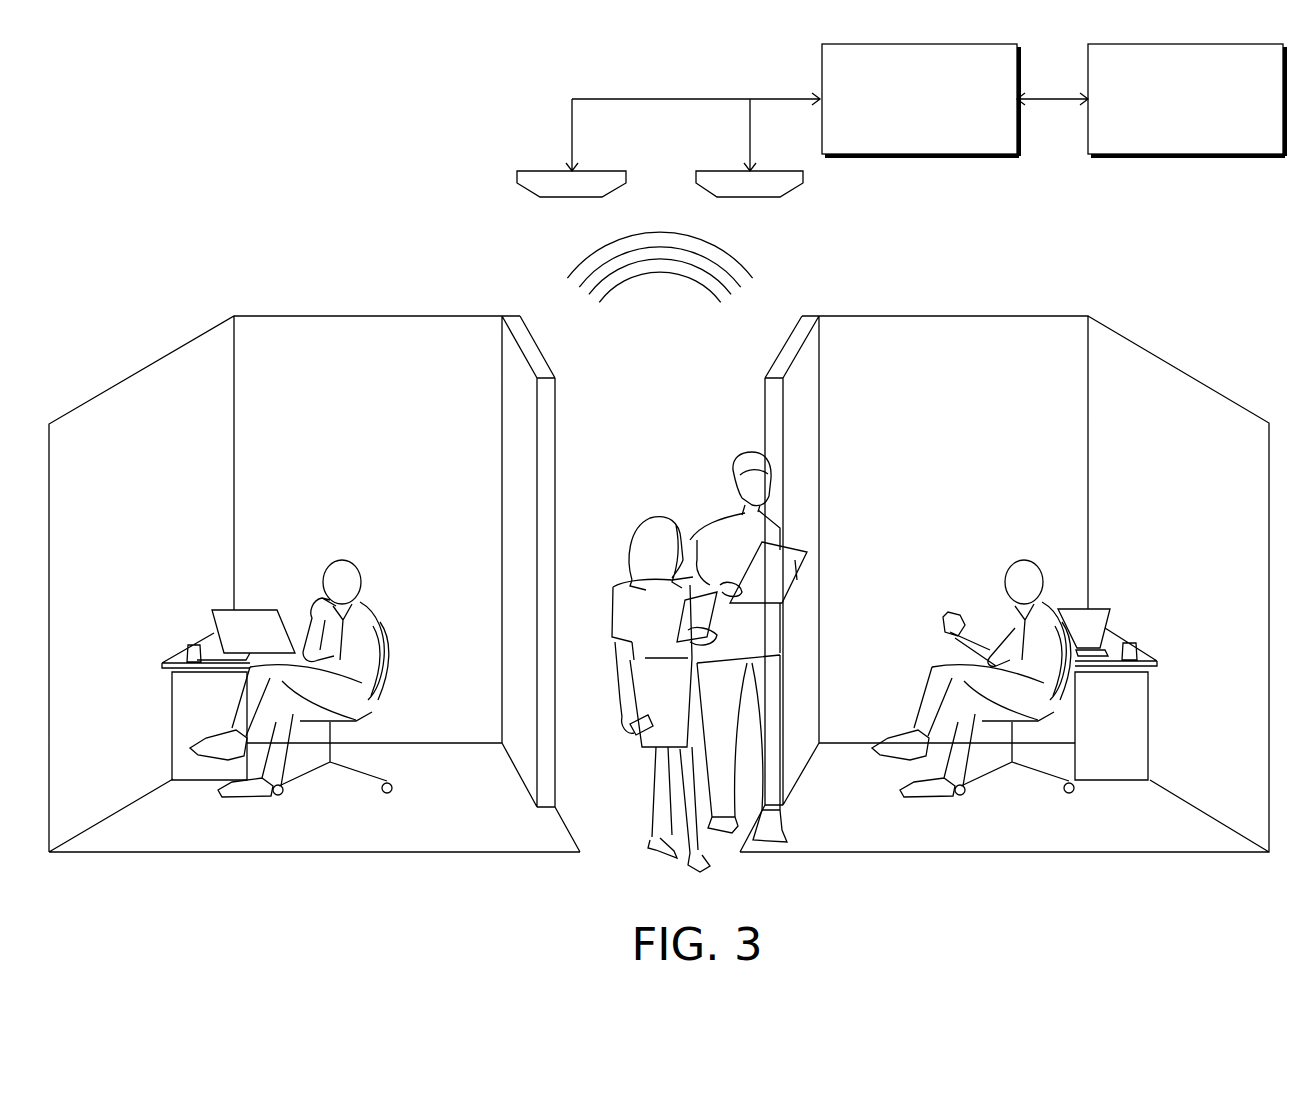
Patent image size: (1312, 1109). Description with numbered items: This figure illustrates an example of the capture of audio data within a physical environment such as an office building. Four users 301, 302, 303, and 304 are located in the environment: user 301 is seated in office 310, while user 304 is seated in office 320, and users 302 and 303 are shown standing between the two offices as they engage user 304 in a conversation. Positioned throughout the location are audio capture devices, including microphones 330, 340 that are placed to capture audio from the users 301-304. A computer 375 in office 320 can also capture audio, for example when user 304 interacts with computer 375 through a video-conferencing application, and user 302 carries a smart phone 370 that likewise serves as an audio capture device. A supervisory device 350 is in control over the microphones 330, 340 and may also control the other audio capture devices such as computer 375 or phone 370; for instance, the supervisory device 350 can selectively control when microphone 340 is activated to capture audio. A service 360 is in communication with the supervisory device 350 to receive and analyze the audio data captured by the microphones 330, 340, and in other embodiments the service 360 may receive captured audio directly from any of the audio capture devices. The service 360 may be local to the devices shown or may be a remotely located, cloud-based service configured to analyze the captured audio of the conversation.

The user 301 is at (355, 558).
The user 302 is at (642, 694).
The user 303 is at (727, 482).
The user 304 is at (1003, 557).
The office 310 is at (308, 367).
The office 320 is at (1051, 367).
The microphone 330 is at (715, 167).
The microphone 340 is at (535, 167).
The supervisory device 350 is at (900, 142).
The service 360 is at (1167, 142).
The smart phone 370 is at (637, 742).
The computer 375 is at (1107, 594).